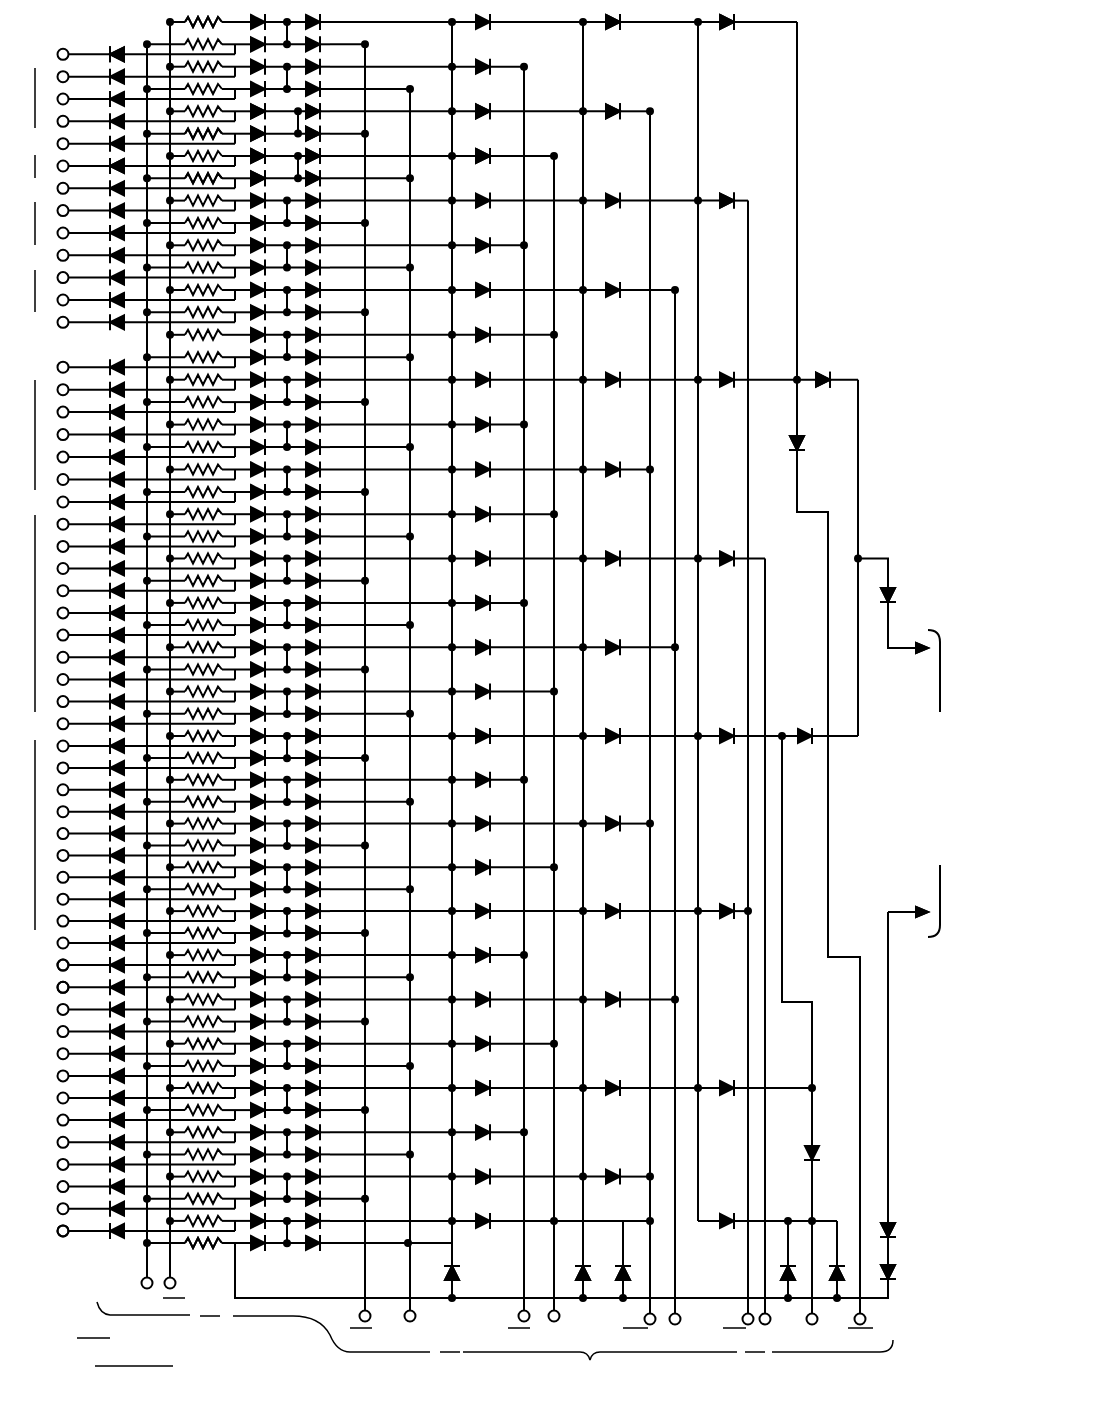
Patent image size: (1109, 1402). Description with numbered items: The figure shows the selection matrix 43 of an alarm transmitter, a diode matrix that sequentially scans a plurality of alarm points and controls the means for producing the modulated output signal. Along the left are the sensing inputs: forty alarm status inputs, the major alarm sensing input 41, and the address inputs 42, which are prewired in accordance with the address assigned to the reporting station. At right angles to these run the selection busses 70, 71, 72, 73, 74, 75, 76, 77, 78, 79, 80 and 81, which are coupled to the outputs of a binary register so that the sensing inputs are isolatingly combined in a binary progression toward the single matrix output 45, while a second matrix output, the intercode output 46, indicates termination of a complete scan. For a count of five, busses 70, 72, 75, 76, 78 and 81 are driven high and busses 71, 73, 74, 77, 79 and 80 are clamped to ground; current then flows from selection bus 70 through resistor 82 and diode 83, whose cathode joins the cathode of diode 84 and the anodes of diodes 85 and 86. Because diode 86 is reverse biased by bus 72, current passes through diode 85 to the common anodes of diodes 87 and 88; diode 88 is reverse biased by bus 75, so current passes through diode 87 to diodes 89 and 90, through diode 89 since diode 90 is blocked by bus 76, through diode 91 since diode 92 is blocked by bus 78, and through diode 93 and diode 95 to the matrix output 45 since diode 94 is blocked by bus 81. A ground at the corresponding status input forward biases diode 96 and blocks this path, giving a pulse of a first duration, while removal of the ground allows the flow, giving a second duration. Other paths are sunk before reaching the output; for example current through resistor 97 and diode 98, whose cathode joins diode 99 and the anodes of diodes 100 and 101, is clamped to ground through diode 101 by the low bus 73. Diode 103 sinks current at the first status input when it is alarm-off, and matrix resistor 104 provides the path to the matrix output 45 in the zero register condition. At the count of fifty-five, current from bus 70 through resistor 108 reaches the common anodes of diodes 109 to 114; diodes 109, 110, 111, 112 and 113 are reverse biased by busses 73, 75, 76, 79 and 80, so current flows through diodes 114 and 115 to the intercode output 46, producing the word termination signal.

The major alarm sensing input 41 is at (70, 970).
The address inputs 42 is at (57, 985).
The selection matrix 43 is at (836, 209).
The matrix output 45 is at (905, 640).
The intercode output 46 is at (893, 925).
The selection bus 70 is at (146, 1270).
The bus 71 is at (171, 1272).
The bus 72 is at (364, 1287).
The bus 73 is at (409, 1274).
The bus 74 is at (523, 1258).
The bus 75 is at (553, 1265).
The bus 76 is at (652, 1254).
The bus 77 is at (676, 1290).
The bus 78 is at (747, 1268).
The bus 79 is at (764, 1290).
The bus 80 is at (814, 1296).
The bus 81 is at (862, 1296).
The resistor 82 is at (193, 130).
The diode 83 is at (256, 132).
The diode 84 is at (256, 110).
The diode 85 is at (312, 110).
The diode 86 is at (312, 132).
The diode 87 is at (484, 104).
The diode 88 is at (485, 150).
The diode 89 is at (616, 28).
The diode 90 is at (617, 105).
The diode 91 is at (728, 30).
The diode 92 is at (732, 193).
The diode 93 is at (828, 372).
The diode 94 is at (808, 440).
The diode 95 is at (896, 586).
The diode 96 is at (112, 163).
The resistor 97 is at (193, 175).
The diode 98 is at (256, 176).
The diode 99 is at (256, 154).
The diode 100 is at (312, 154).
The diode 101 is at (312, 176).
The diode 103 is at (115, 46).
The matrix resistor 104 is at (193, 21).
The resistor 108 is at (222, 1246).
The diode 109 is at (457, 1272).
The diode 110 is at (586, 1265).
The diode 111 is at (616, 1282).
The diode 112 is at (790, 1258).
The diode 113 is at (838, 1258).
The diode 114 is at (892, 1270).
The diode 115 is at (892, 1226).